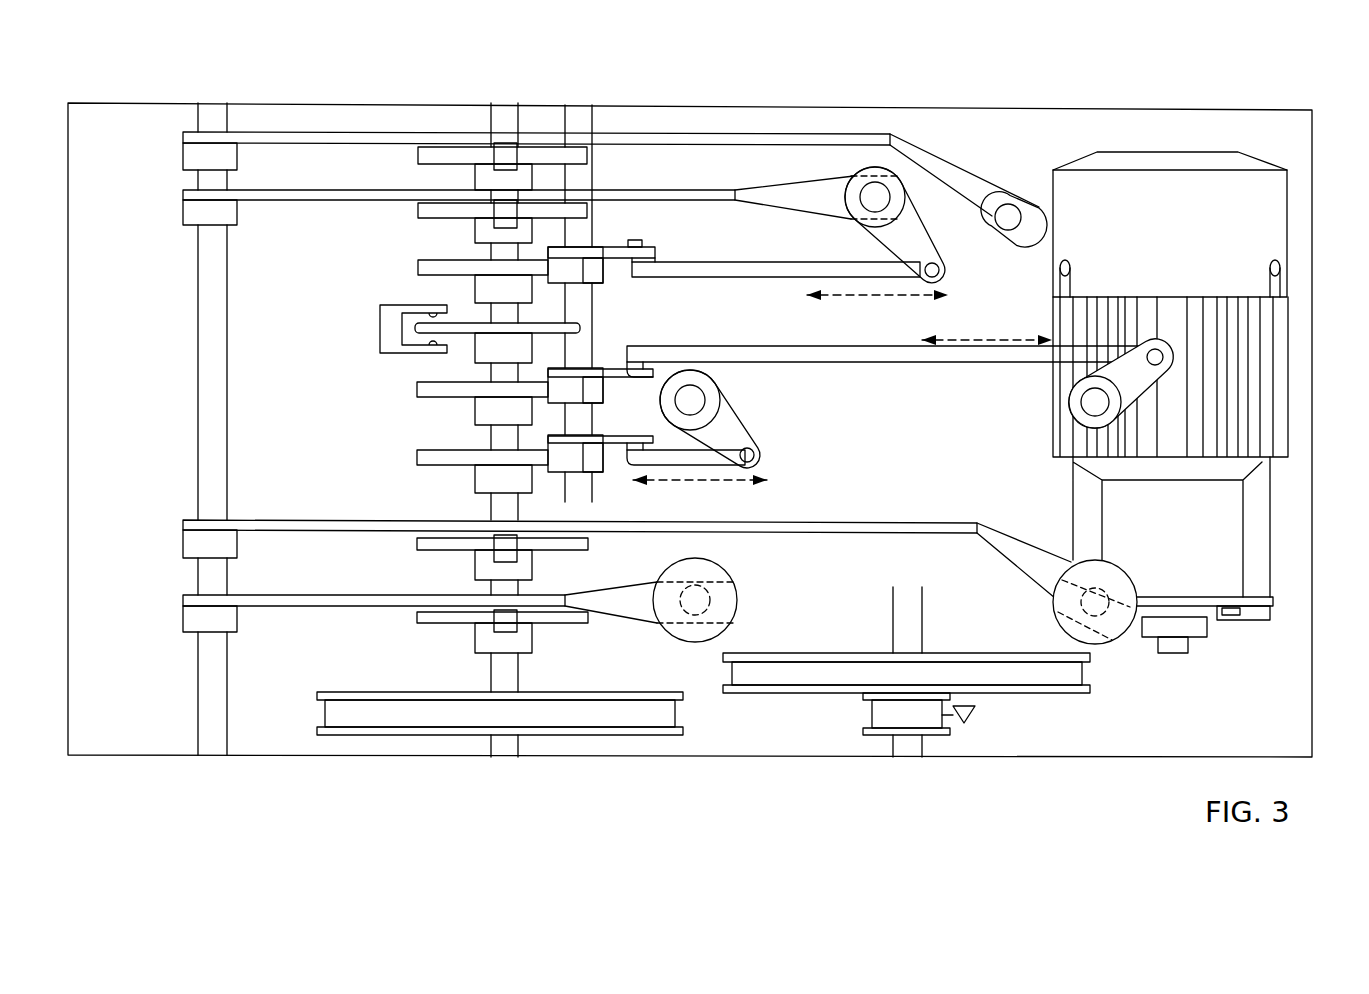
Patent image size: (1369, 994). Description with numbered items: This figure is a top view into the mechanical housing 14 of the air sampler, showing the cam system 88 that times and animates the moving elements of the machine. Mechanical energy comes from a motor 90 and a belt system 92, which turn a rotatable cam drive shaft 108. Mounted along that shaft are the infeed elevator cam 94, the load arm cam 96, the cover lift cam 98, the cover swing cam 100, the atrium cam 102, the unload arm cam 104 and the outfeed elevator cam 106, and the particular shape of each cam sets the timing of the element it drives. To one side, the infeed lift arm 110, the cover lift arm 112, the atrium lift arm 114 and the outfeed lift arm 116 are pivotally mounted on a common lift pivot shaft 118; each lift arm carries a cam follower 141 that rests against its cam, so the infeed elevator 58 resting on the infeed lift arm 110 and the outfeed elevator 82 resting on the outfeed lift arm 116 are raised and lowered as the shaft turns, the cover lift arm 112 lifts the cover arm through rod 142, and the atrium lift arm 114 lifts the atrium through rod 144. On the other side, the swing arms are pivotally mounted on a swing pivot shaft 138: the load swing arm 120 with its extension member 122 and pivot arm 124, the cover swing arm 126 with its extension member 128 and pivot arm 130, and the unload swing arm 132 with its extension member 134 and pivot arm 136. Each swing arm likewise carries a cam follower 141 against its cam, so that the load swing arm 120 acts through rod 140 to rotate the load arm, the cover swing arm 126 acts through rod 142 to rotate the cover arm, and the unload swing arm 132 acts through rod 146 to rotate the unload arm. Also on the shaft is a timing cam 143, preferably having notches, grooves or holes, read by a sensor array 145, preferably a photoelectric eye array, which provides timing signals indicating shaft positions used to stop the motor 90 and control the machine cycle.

The mechanical housing 14 is at (1298, 108).
The cam system 88 is at (868, 97).
The lift pivot shaft 118 is at (223, 727).
The atrium lift arm 114 is at (318, 132).
The cover lift arm 112 is at (318, 190).
The outfeed lift arm 116 is at (312, 520).
The infeed lift arm 110 is at (318, 595).
The atrium cam 102 is at (418, 155).
The cover lift cam 98 is at (418, 212).
The cover swing cam 100 is at (418, 267).
The unload arm cam 104 is at (418, 392).
The load arm cam 96 is at (418, 458).
The outfeed elevator cam 106 is at (417, 545).
The infeed elevator cam 94 is at (440, 624).
The cam follower 141 is at (497, 165).
The swing pivot shaft 138 is at (596, 118).
The sensor array 145 is at (380, 308).
The cam 143 is at (417, 323).
The cover swing arm 126 is at (615, 250).
The extension member 128 is at (750, 262).
The pivot arm 130 is at (930, 233).
The rod 142 is at (850, 180).
The rod 144 is at (996, 200).
The extension member 134 is at (690, 346).
The unload swing arm 132 is at (608, 356).
The load swing arm 120 is at (600, 440).
The extension member 122 is at (683, 480).
The pivot arm 124 is at (735, 435).
The rod 140 is at (702, 390).
The pivot arm 136 is at (1171, 340).
The rod 146 is at (1081, 405).
The motor 90 is at (1270, 523).
The outfeed elevator 82 is at (1120, 562).
The infeed elevator 58 is at (722, 565).
The belt system 92 is at (976, 712).
The cam drive shaft 108 is at (517, 748).